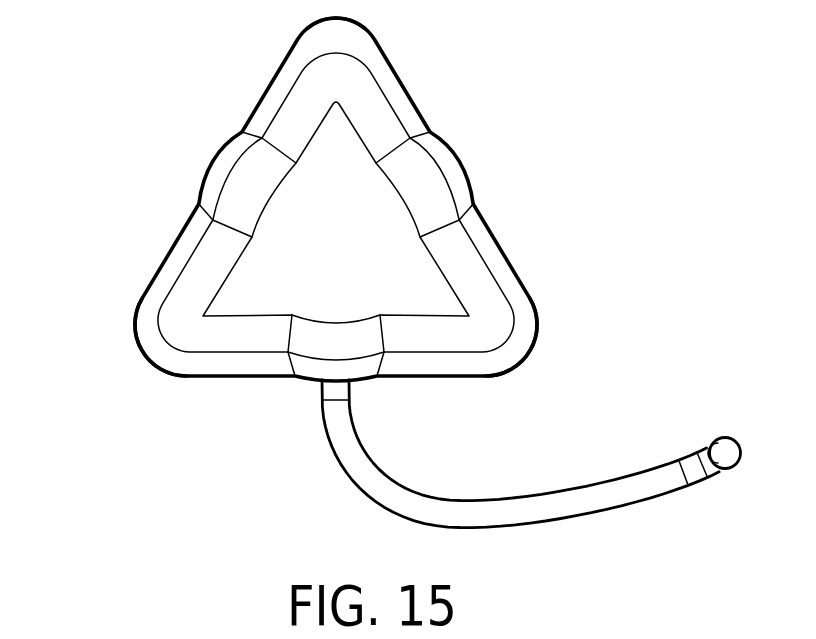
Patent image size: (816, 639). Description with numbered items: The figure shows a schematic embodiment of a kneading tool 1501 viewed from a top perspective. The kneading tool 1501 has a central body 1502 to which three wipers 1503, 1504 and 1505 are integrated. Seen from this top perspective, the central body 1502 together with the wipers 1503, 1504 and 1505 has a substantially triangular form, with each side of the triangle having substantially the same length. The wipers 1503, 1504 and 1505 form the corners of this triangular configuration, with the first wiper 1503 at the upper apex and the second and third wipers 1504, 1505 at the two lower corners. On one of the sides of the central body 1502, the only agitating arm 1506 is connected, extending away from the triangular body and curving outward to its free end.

The kneading tool 1501 is at (122, 117).
The central body 1502 is at (370, 195).
The wiper 1503 is at (338, 33).
The wiper 1504 is at (143, 330).
The wiper 1505 is at (517, 340).
The agitating arm 1506 is at (557, 507).